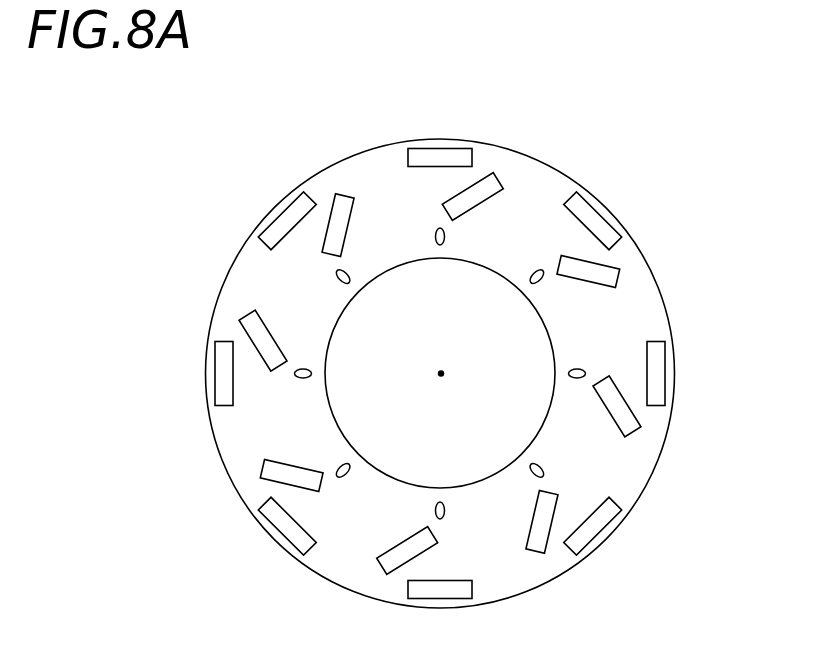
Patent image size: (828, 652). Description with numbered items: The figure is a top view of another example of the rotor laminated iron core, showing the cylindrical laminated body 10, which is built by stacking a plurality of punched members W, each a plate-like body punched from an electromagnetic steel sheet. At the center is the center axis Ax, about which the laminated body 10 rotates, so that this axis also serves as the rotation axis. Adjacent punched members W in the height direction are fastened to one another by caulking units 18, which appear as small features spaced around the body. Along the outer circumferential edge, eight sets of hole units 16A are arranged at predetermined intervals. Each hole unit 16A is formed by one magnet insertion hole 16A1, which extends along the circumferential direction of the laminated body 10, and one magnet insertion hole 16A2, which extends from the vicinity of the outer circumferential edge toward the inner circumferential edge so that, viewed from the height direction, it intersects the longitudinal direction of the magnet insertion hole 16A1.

The laminated body 10 is at (660, 158).
The punched member W is at (240, 499).
The center axis Ax is at (447, 372).
The caulking unit 18 is at (336, 281).
The hole unit 16A is at (365, 108).
The magnet insertion hole 16A1 is at (455, 115).
The magnet insertion hole 16A2 is at (523, 115).